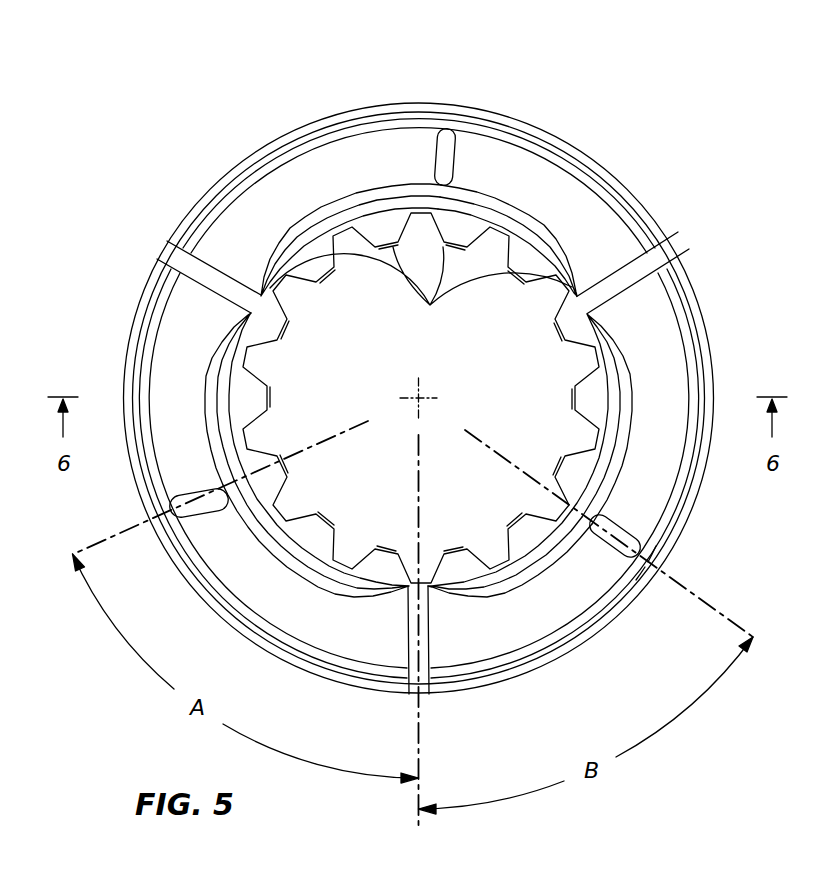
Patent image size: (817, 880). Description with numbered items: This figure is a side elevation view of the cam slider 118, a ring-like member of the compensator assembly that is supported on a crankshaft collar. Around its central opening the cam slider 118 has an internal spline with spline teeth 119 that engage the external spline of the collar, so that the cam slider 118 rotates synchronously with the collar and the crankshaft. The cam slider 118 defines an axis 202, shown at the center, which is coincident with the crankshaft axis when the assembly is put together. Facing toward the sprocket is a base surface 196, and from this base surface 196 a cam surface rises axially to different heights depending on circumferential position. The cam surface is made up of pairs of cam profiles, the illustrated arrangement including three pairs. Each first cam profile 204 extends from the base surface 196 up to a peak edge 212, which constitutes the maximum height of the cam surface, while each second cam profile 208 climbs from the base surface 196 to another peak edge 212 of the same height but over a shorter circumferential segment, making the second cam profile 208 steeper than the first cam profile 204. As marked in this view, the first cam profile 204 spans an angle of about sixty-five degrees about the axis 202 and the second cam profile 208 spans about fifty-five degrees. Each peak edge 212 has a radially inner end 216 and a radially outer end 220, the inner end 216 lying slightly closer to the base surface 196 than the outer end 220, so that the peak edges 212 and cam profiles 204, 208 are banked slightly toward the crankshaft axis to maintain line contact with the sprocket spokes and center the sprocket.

The cam slider 118 is at (226, 110).
The spline teeth 119 is at (421, 398).
The base surface 196 is at (207, 273).
The axis 202 is at (419, 398).
The first cam profile 204 is at (332, 182).
The second cam profile 208 is at (540, 198).
The peak edge 212 is at (443, 163).
The radially inner end 216 is at (600, 514).
The radially outer end 220 is at (635, 546).